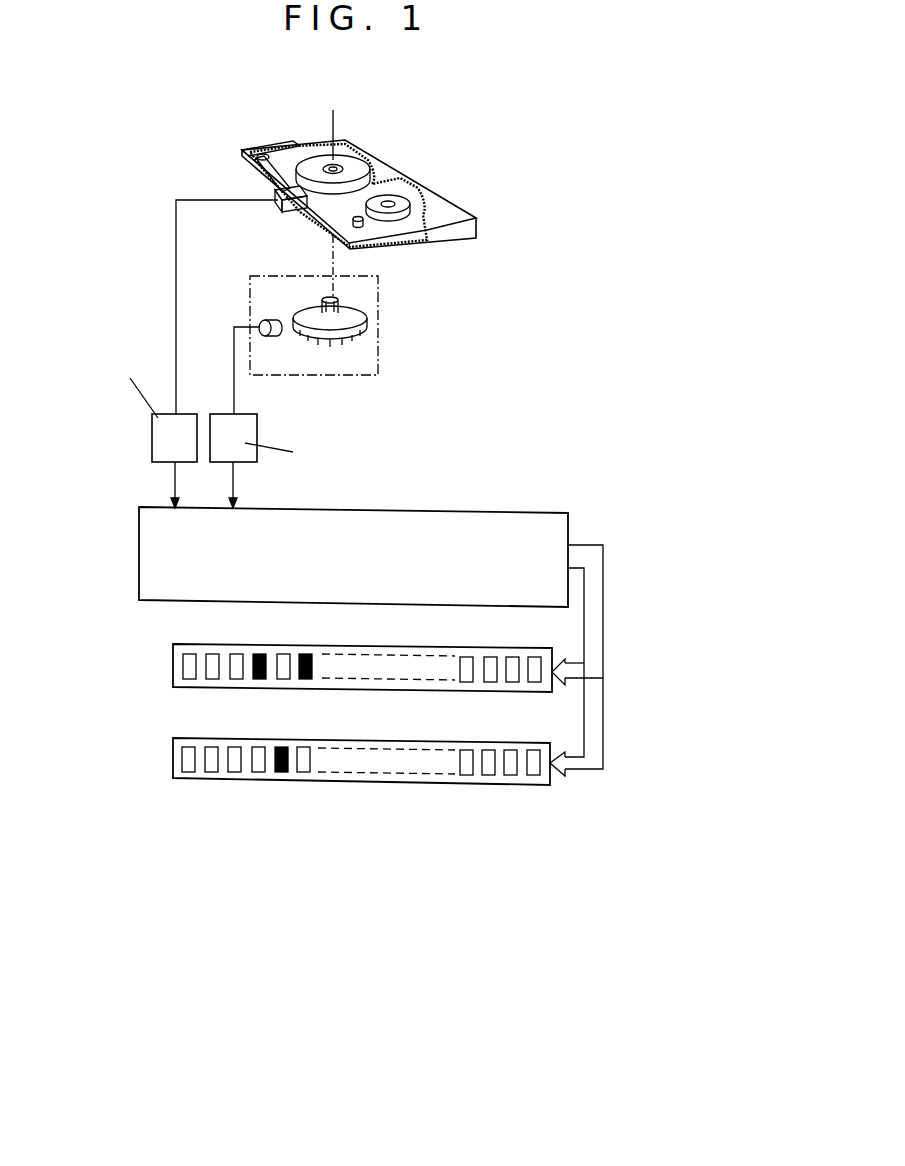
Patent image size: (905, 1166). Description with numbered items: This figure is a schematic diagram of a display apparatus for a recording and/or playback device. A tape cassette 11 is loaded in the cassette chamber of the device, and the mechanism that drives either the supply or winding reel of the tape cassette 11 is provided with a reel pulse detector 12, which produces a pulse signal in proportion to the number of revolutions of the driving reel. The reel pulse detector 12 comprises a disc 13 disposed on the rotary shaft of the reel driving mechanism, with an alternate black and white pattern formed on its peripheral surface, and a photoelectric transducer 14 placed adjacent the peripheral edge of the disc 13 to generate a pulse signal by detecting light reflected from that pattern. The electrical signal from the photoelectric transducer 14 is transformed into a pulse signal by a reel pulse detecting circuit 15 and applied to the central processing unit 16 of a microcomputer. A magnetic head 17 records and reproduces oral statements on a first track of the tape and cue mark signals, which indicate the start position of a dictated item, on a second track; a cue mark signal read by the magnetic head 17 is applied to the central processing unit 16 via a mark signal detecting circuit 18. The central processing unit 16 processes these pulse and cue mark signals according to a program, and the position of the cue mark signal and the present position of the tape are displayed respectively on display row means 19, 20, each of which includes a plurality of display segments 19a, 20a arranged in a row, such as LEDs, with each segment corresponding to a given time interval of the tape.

The tape cassette 11 is at (418, 190).
The reel pulse detector 12 is at (378, 283).
The disc 13 is at (357, 322).
The photoelectric transducer 14 is at (260, 322).
The reel pulse detecting circuit 15 is at (247, 424).
The central processing unit 16 is at (464, 522).
The magnetic head 17 is at (292, 205).
The mark signal detecting circuit 18 is at (152, 425).
The display row means 19 is at (178, 663).
The display segment 19a is at (463, 682).
The display row means 20 is at (175, 758).
The display segment 20a is at (461, 775).